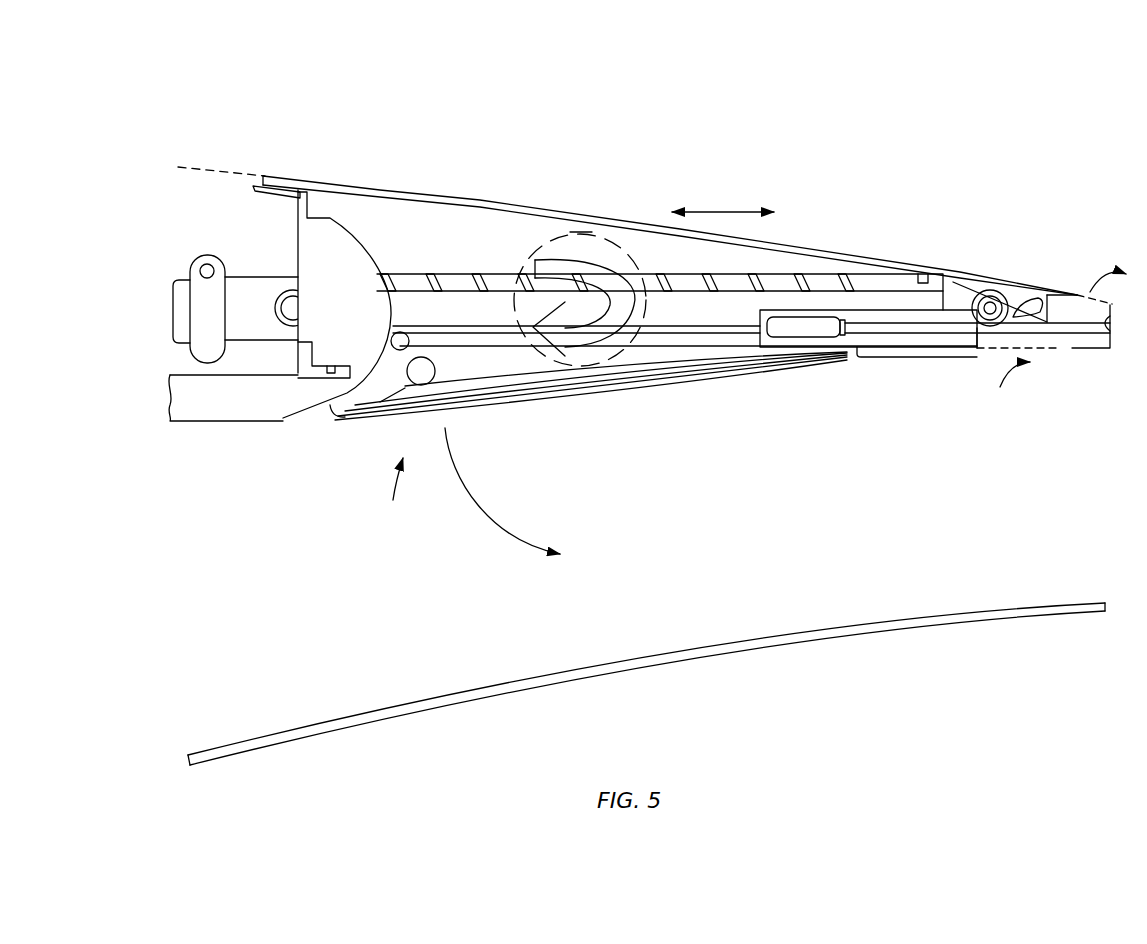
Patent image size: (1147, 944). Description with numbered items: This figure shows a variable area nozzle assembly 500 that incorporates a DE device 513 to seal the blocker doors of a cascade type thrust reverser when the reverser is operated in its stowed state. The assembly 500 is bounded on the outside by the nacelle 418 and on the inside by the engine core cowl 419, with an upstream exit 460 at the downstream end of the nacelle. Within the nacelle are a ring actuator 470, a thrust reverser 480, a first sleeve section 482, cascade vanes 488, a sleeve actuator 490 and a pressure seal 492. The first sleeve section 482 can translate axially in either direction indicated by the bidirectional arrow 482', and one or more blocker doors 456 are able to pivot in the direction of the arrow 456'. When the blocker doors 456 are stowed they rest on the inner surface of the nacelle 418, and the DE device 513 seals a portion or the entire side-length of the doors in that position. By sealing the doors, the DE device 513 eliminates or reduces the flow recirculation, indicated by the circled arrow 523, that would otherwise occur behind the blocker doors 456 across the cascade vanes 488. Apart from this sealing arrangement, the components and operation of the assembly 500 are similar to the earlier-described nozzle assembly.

The nacelle 418 is at (220, 170).
The engine core cowl 419 is at (950, 606).
The blocker doors 456 is at (591, 412).
The arrow 456' is at (502, 491).
The upstream exit 460 is at (1076, 278).
The ring actuator 470 is at (923, 334).
The thrust reverser 480 is at (389, 500).
The first sleeve section 482 is at (687, 217).
The bidirectional arrow 482' is at (723, 171).
The cascade vanes 488 is at (668, 292).
The sleeve actuator 490 is at (459, 308).
The pressure seal 492 is at (1043, 314).
The variable area nozzle assembly 500 is at (1048, 124).
The DE device 513 is at (719, 371).
The circled arrow 523 is at (581, 230).